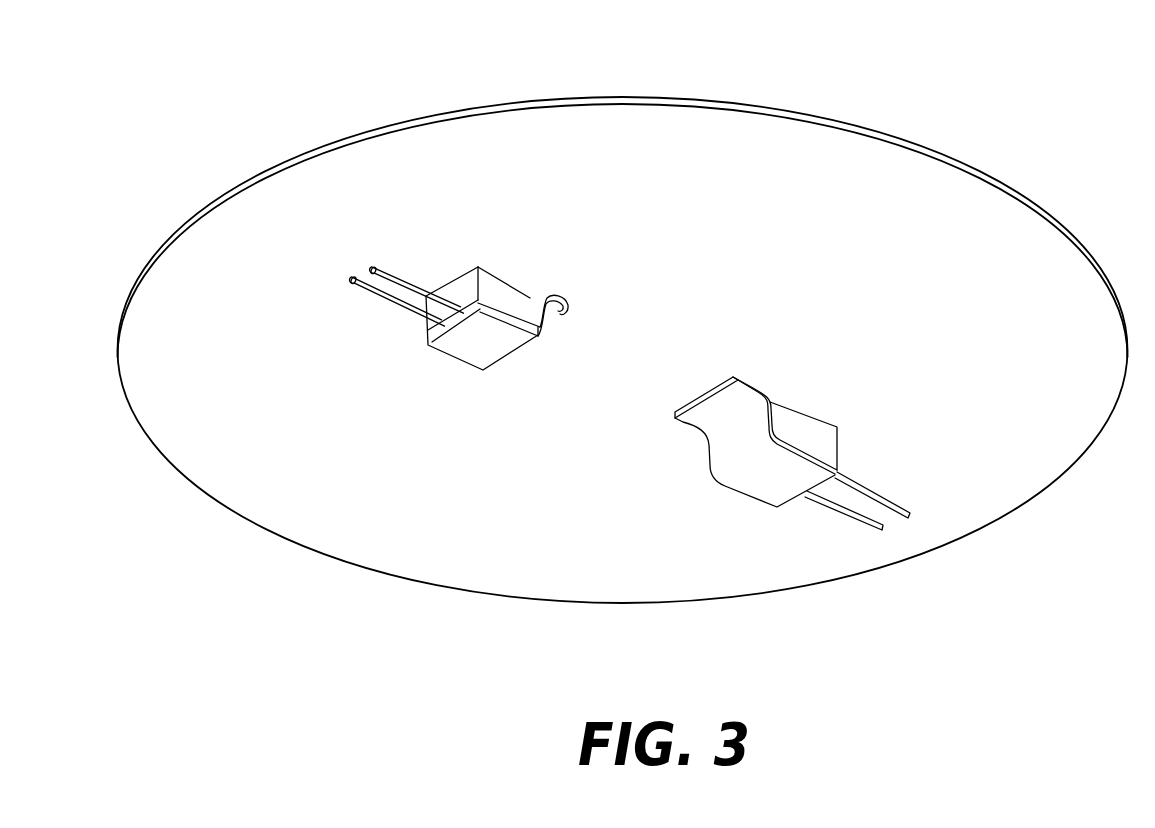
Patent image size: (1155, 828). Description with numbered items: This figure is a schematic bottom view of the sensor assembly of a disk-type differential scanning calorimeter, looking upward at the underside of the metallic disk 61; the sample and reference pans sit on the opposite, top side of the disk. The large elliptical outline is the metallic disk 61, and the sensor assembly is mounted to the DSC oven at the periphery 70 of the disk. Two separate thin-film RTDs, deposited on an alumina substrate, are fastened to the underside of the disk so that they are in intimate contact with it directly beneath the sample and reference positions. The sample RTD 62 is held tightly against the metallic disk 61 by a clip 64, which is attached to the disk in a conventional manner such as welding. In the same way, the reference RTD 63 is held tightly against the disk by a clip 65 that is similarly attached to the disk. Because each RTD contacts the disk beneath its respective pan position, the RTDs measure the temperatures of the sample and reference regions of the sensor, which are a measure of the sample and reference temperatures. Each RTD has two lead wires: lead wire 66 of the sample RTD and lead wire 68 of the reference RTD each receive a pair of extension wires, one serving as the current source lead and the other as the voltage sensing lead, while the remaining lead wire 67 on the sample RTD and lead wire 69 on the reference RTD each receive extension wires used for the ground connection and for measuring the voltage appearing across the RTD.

The periphery 70 is at (613, 98).
The metallic disk 61 is at (770, 160).
The reference RTD 63 is at (478, 267).
The clip 65 is at (428, 343).
The lead wire 68 is at (385, 265).
The lead wire 69 is at (352, 279).
The clip 64 is at (777, 507).
The sample RTD 62 is at (837, 427).
The lead wire 66 is at (917, 515).
The lead wire 67 is at (887, 527).